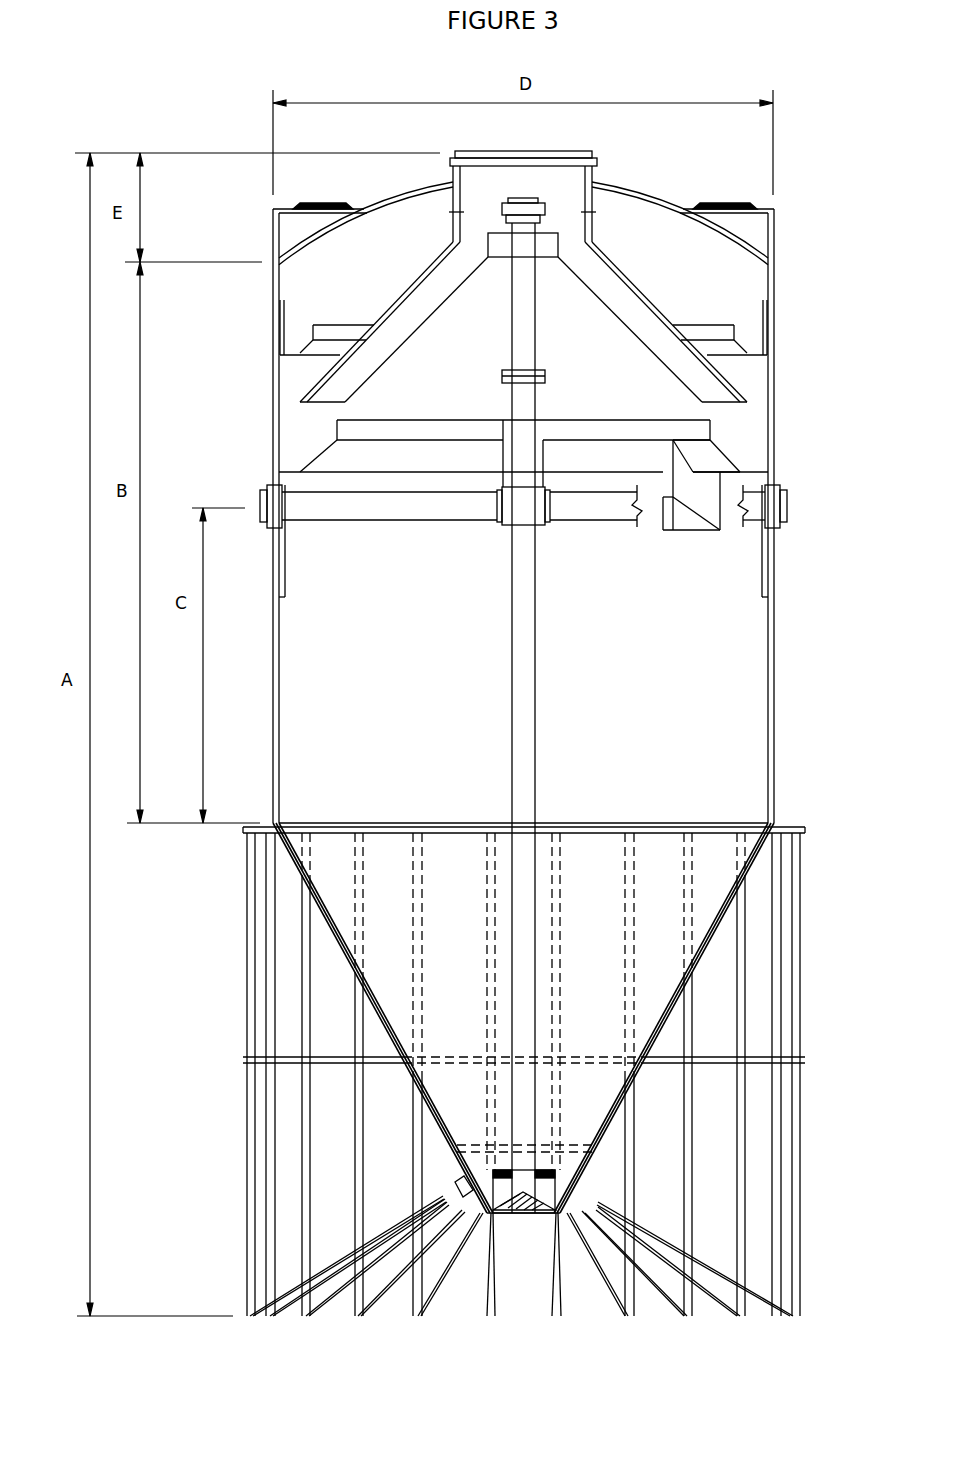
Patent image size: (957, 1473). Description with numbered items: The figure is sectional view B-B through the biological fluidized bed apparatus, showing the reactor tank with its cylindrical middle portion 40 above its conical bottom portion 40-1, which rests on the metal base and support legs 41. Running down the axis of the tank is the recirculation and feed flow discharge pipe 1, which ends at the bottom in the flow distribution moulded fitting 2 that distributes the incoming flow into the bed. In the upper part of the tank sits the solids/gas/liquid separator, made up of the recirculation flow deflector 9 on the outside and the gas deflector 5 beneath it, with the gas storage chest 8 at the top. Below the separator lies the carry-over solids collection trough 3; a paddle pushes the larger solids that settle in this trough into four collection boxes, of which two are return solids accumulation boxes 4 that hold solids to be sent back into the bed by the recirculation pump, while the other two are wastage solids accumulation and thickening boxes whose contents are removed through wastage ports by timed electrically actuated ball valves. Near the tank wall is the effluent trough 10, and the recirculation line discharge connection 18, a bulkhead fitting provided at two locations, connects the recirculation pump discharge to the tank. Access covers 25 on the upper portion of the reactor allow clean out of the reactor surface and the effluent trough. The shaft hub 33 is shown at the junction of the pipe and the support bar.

The recirculation and feed flow discharge pipe 1 is at (535, 762).
The flow distribution moulded fitting 2 is at (542, 1170).
The carry-over solids collection trough 3 is at (300, 472).
The return solids accumulation box 4 is at (547, 457).
The gas deflector 5 is at (428, 318).
The gas storage chest 8 is at (523, 196).
The recirculation flow deflector 9 is at (437, 258).
The effluent trough 10 is at (303, 352).
The recirculation line discharge connection 18 is at (787, 505).
The access covers 25 is at (722, 205).
The shaft hub 33 is at (510, 525).
The reactor tank cylindrical middle portion 40 is at (775, 765).
The reactor tank conical bottom portion 40-1 is at (704, 950).
The support legs 41 is at (800, 1153).